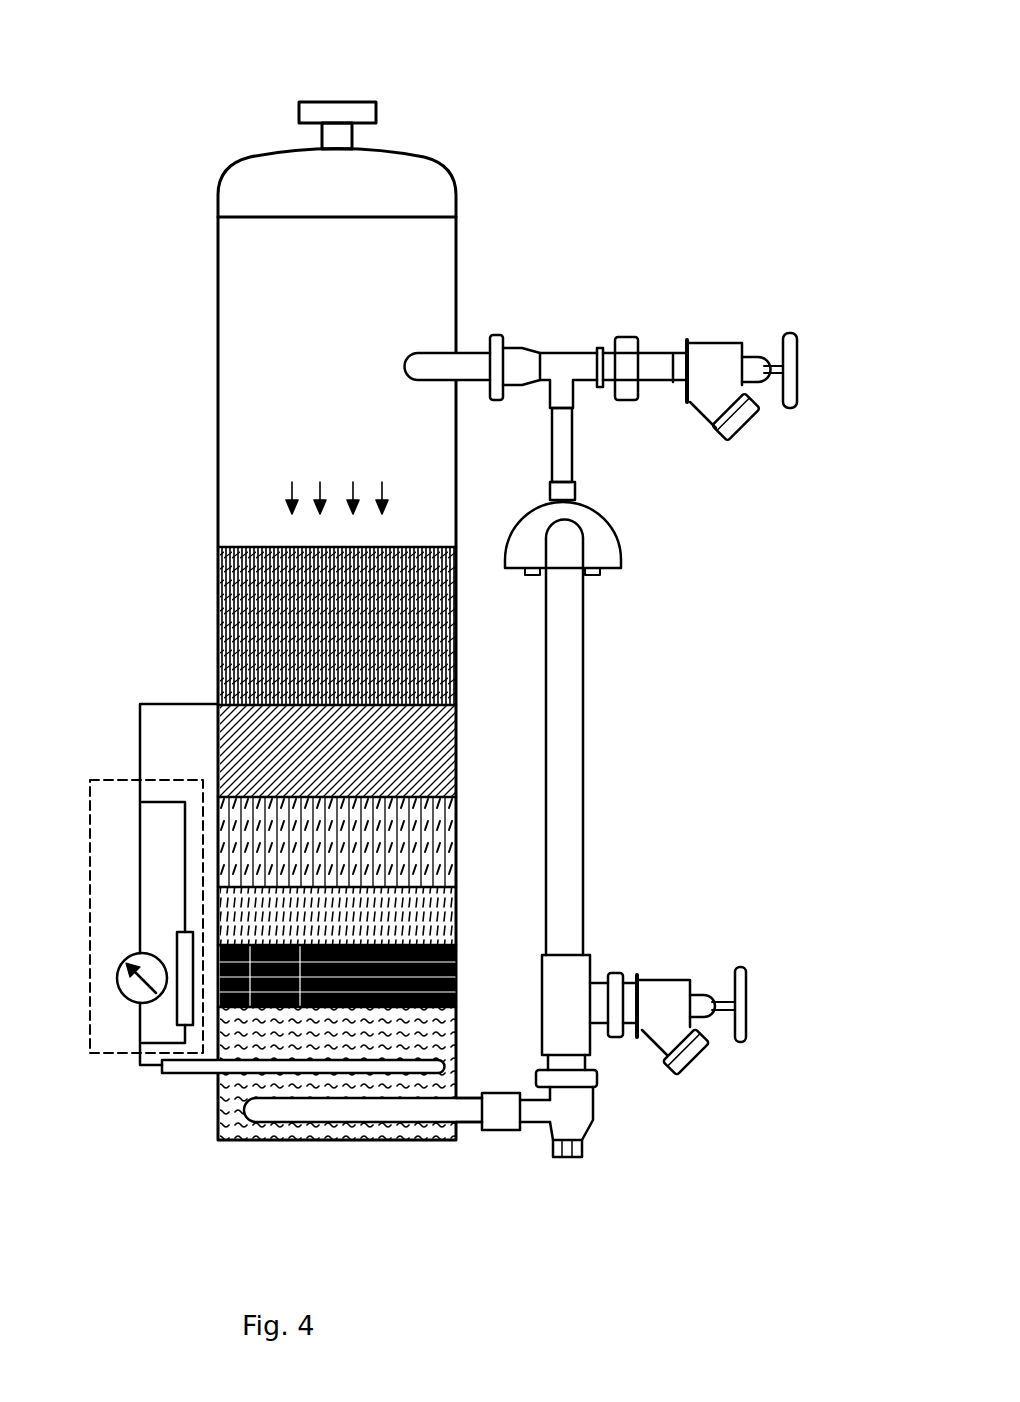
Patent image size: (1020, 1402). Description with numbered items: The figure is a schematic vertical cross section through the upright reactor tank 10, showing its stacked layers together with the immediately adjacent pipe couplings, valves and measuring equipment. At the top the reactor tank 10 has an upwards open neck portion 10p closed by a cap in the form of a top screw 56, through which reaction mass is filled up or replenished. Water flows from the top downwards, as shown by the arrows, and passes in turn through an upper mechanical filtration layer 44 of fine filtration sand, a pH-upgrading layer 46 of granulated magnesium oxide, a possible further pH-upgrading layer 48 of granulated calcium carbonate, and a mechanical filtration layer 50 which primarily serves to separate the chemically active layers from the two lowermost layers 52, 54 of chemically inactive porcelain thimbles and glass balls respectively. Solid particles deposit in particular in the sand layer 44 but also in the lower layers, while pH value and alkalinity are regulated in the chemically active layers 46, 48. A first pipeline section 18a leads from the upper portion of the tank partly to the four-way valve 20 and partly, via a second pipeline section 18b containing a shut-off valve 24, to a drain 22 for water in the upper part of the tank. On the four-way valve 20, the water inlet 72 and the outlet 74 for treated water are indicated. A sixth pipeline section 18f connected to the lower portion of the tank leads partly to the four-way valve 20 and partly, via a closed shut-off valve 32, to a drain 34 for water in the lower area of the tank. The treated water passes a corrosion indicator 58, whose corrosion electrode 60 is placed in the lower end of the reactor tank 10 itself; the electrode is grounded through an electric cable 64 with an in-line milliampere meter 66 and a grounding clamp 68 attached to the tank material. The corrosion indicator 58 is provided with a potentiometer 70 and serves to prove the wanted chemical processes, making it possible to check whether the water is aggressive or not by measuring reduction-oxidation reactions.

The reactor tank 10 is at (205, 262).
The neck portion 10p is at (343, 135).
The top screw 56 is at (328, 108).
The first pipeline section 18a is at (470, 360).
The second pipeline section 18b is at (657, 367).
The shut-off valve 24 is at (788, 400).
The drain 22 is at (735, 423).
The four-way valve 20 is at (628, 595).
The outlet for treated water 74 is at (531, 576).
The water inlet 72 is at (596, 578).
The sixth pipeline section 18f is at (570, 870).
The shut-off valve 32 is at (766, 985).
The drain 34 is at (578, 1158).
The upper mechanical filtration layer 44 is at (458, 668).
The pH-upgrading layer 46 is at (458, 745).
The pH-upgrading layer 48 is at (458, 812).
The mechanical filtration layer 50 is at (458, 898).
The layer of porcelain thimbles 52 is at (458, 960).
The layer of glass balls 54 is at (430, 1055).
The grounding clamp 68 is at (216, 703).
The potentiometer 70 is at (175, 945).
The milliampere meter 66 is at (114, 975).
The corrosion indicator 58 is at (110, 1058).
The electric cable 64 is at (160, 1076).
The corrosion electrode 60 is at (243, 1118).